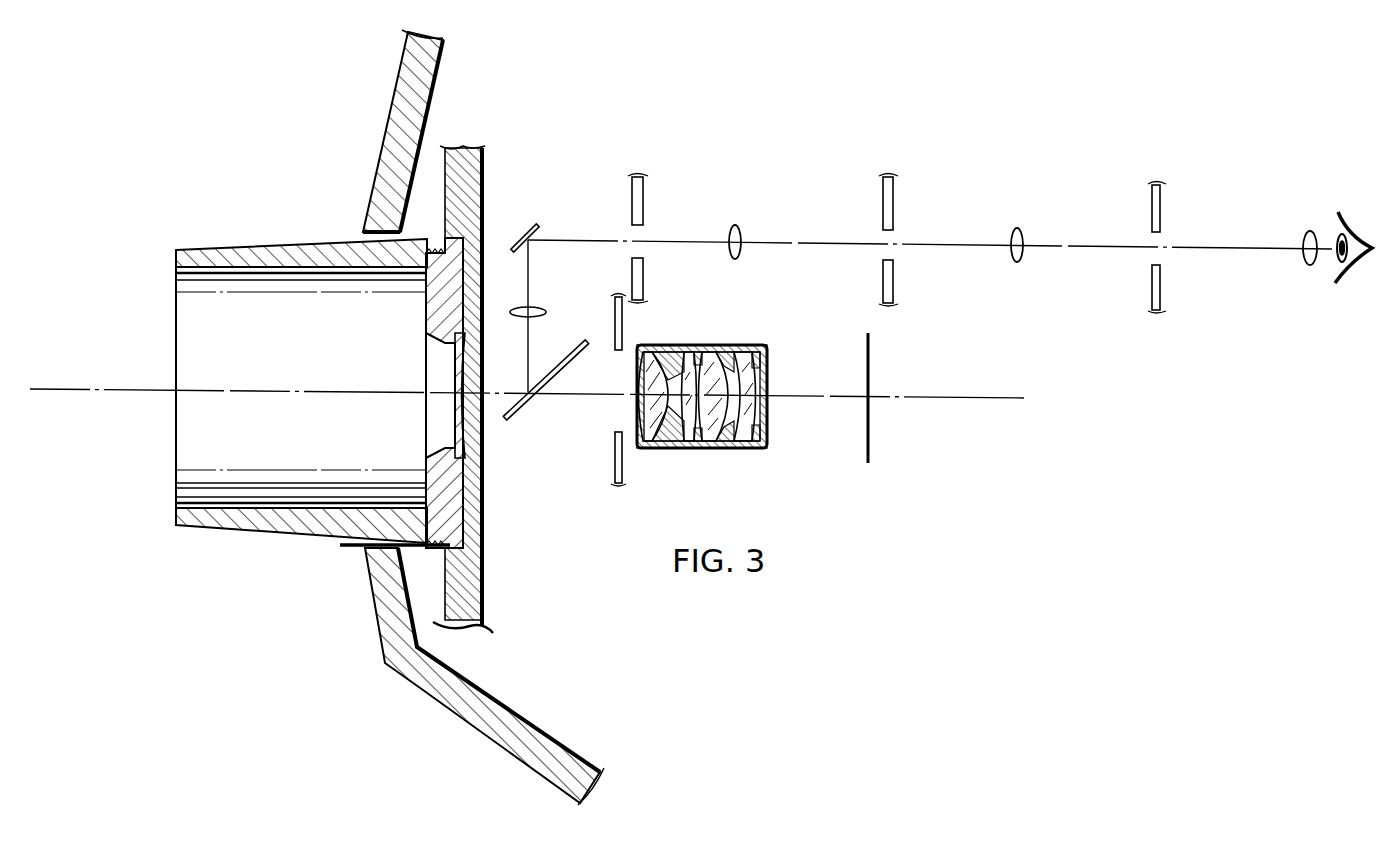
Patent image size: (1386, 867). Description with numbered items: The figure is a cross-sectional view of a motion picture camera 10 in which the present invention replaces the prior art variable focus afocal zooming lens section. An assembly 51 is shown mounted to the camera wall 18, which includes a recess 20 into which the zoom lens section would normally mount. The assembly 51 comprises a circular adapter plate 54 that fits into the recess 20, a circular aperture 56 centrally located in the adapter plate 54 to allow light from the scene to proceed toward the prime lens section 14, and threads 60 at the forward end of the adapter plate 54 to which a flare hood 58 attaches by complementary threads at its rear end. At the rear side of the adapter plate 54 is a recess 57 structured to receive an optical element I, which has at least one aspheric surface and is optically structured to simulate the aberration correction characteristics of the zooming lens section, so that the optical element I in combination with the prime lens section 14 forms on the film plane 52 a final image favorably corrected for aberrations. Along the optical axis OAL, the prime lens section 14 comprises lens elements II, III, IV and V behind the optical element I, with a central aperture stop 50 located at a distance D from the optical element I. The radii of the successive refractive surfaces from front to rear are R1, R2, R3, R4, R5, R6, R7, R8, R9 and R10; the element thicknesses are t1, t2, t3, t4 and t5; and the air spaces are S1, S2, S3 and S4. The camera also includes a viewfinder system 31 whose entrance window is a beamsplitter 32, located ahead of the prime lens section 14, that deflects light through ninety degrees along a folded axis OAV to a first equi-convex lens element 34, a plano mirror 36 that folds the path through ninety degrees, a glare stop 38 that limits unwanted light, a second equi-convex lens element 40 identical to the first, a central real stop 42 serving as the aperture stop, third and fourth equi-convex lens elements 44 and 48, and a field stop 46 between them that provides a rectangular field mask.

The motion picture camera 10 is at (385, 112).
The prime lens section 14 is at (723, 396).
The camera wall 18 is at (484, 186).
The recess 20 is at (500, 232).
The viewfinder system 31 is at (920, 153).
The beamsplitter 32 is at (522, 400).
The first equi-convex lens element 34 is at (531, 308).
The plano mirror 36 is at (522, 228).
The glare stop 38 is at (644, 209).
The second equi-convex lens element 40 is at (741, 238).
The central real stop 42 is at (894, 224).
The third equi-convex lens element 44 is at (1023, 241).
The field stop 46 is at (1161, 226).
The fourth equi-convex lens element 48 is at (1304, 247).
The central aperture stop 50 is at (614, 472).
The assembly 51 is at (235, 243).
The film plane 52 is at (870, 440).
The circular adapter plate 54 is at (430, 316).
The circular aperture 56 is at (432, 455).
The recess 57 is at (465, 322).
The flare hood 58 is at (298, 508).
The threads 60 is at (445, 250).
The optical element I is at (465, 455).
The lens element II is at (655, 445).
The lens element III is at (690, 444).
The lens element IV is at (722, 444).
The lens element V is at (752, 444).
The radius of first refractive surface R1 is at (453, 358).
The radius of second refractive surface R2 is at (464, 368).
The radius of third refractive surface R3 is at (640, 383).
The radius of fourth refractive surface R4 is at (649, 360).
The radius of fifth refractive surface R5 is at (663, 352).
The radius of sixth refractive surface R6 is at (706, 370).
The radius of seventh refractive surface R7 is at (714, 355).
The radius of eighth refractive surface R8 is at (728, 365).
The radius of ninth refractive surface R9 is at (740, 358).
The radius of tenth refractive surface R10 is at (755, 370).
The thickness of element I t1 is at (460, 400).
The thickness of element II t2 is at (642, 398).
The thickness of element III t3 is at (688, 360).
The thickness of element IV t4 is at (748, 420).
The thickness of element V t5 is at (745, 408).
The first air space S1 is at (470, 392).
The second air space S2 is at (674, 444).
The third air space S3 is at (710, 444).
The fourth air space S4 is at (752, 382).
The distance to central aperture stop D is at (470, 438).
The optical axis of the zooming optical system OAL is at (530, 390).
The folded optical axis of the viewfinder system OAV is at (528, 275).